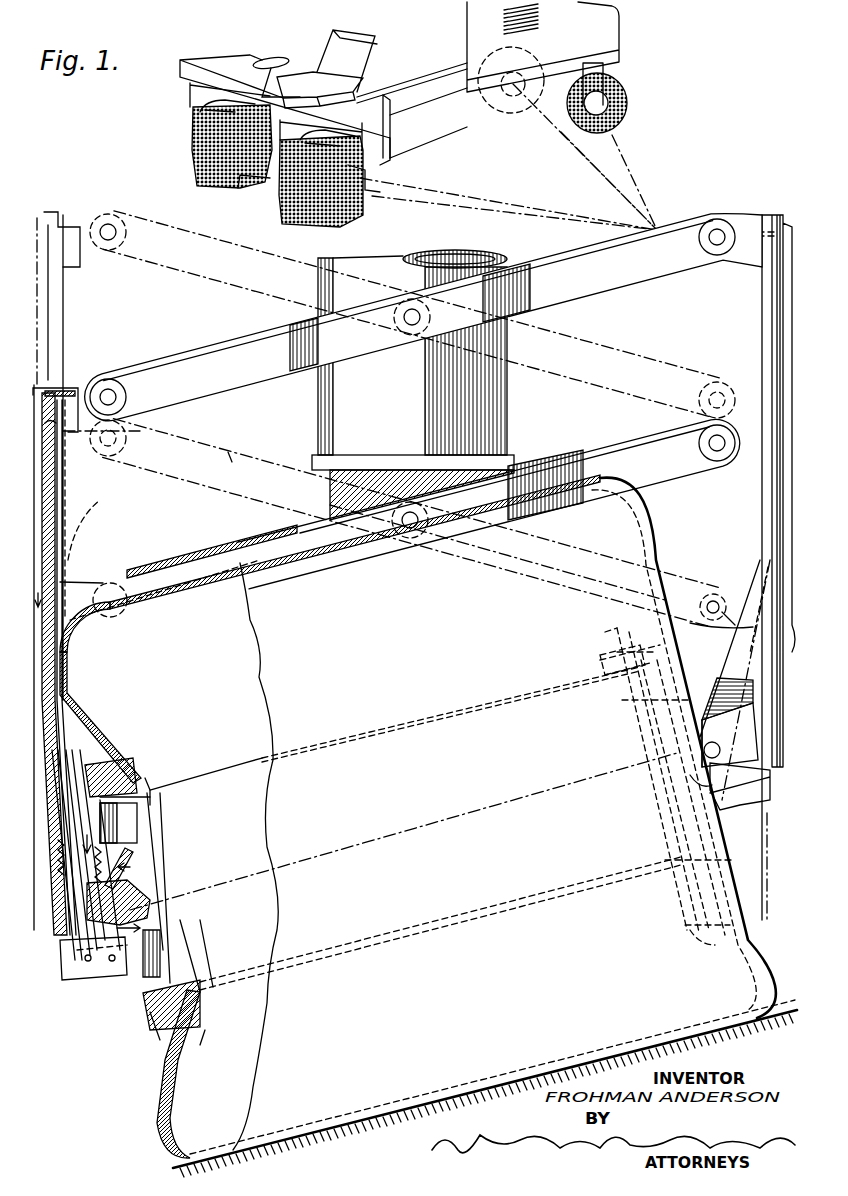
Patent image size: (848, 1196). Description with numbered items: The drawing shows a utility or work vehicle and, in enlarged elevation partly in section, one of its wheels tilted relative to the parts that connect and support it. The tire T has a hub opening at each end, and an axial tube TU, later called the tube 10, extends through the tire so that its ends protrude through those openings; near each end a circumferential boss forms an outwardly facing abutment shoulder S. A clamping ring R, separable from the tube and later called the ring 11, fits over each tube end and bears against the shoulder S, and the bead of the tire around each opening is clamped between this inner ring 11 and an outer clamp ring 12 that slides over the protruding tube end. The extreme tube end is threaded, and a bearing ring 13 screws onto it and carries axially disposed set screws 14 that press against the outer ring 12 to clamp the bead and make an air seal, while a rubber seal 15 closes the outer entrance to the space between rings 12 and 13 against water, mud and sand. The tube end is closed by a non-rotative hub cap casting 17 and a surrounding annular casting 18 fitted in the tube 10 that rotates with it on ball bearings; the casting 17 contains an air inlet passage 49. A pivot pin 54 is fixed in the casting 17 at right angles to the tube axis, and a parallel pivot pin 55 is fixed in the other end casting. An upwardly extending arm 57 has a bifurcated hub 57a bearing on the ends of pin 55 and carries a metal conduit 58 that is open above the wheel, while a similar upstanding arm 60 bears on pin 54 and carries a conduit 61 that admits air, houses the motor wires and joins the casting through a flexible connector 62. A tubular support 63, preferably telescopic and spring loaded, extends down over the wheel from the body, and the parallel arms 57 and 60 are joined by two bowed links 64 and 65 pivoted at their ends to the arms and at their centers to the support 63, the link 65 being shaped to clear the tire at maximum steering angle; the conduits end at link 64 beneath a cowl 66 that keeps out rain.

In FIG. 8, the tube 10 is at (483, 700).
In FIG. 8, the ring 11 is at (600, 655).
In FIG. 8, the outer clamp ring 12 is at (118, 770).
In FIG. 8, the bearing ring 13 is at (624, 735).
In FIG. 8, the set screws 14 is at (150, 1020).
In FIG. 8, the rubber seal 15 is at (603, 629).
In FIG. 8, the hub cap 17 is at (140, 867).
In FIG. 8, the annular casting 18 is at (112, 843).
In FIG. 8, the air inlet passage 49 is at (160, 926).
In FIG. 8, the pivot pin 54 is at (160, 740).
In FIG. 8, the pivot pin 55 is at (701, 776).
In FIG. 1, the arm 57 is at (240, 188).
In FIG. 8, the arm 57 is at (760, 532).
In FIG. 8, the bifurcated hub 57a is at (750, 757).
In FIG. 8, the conduit 58 is at (731, 648).
In FIG. 1, the arm 60 is at (393, 150).
In FIG. 8, the arm 60 is at (47, 562).
In FIG. 8, the conduit 61 is at (70, 478).
In FIG. 8, the flexible connector 62 is at (62, 823).
In FIG. 1, the tubular support 63 is at (215, 118).
In FIG. 8, the tubular support 63 is at (505, 390).
In FIG. 1, the link 64 is at (192, 100).
In FIG. 8, the link 64 is at (168, 276).
In FIG. 1, the link 65 is at (215, 140).
In FIG. 8, the link 65 is at (262, 548).
In FIG. 8, the cowl 66 is at (104, 226).
In FIG. 1, the tire T is at (478, 50).
In FIG. 8, the tire T is at (228, 452).
In FIG. 8, the abutment shoulder S is at (608, 707).
In FIG. 8, the clamping ring R is at (205, 1045).
In FIG. 8, the axial tube TU is at (218, 770).